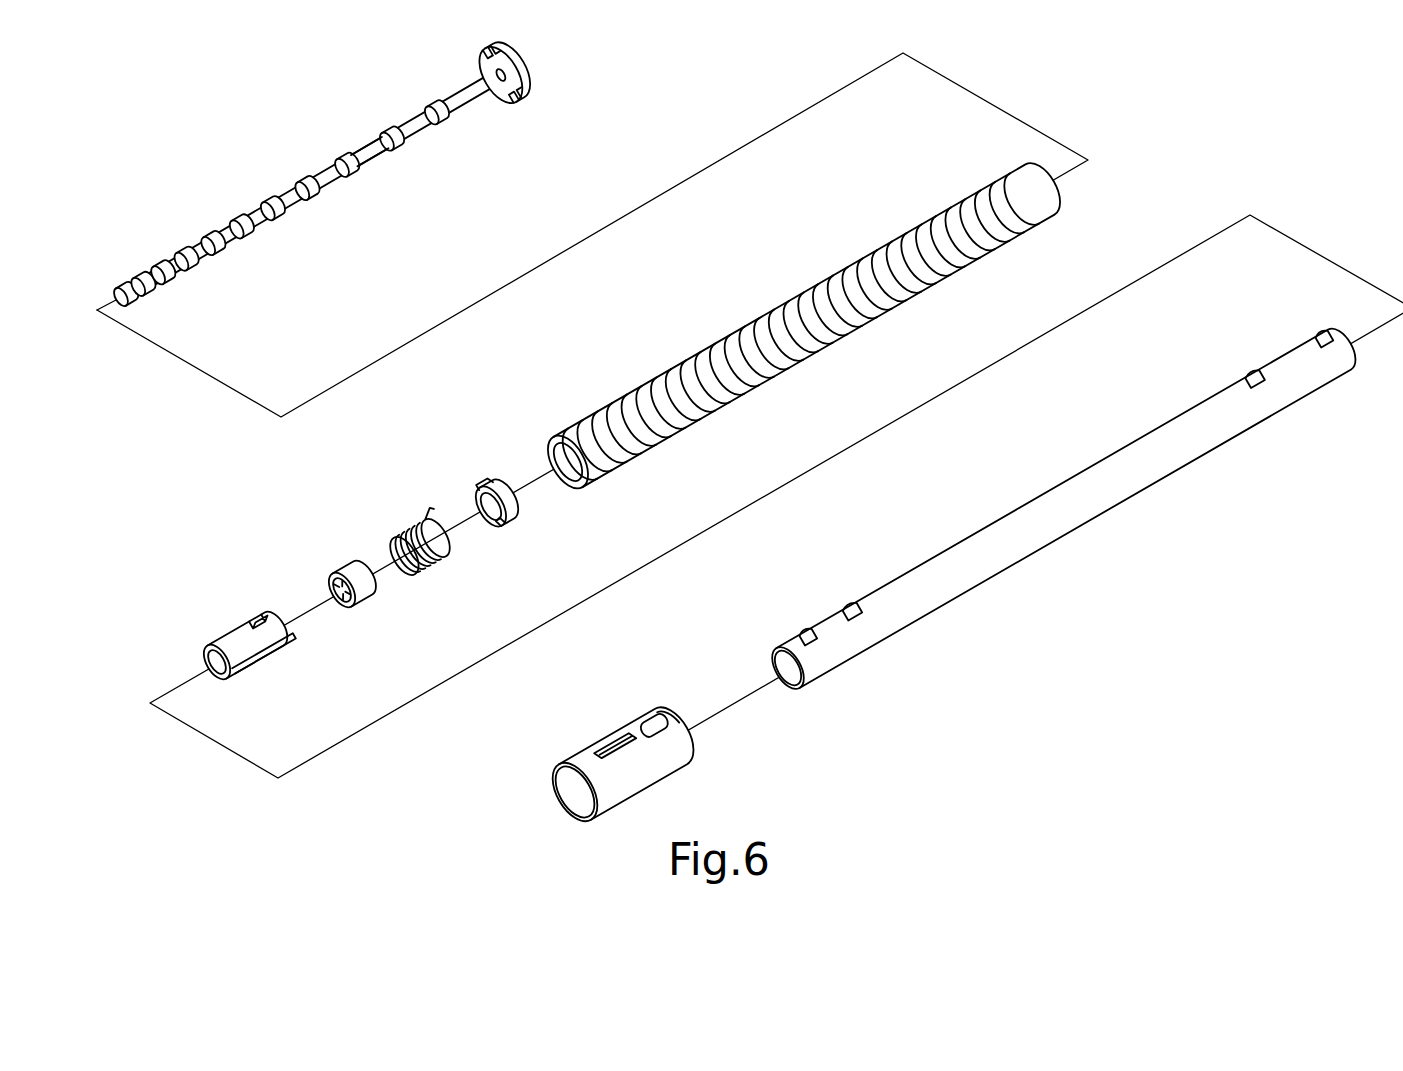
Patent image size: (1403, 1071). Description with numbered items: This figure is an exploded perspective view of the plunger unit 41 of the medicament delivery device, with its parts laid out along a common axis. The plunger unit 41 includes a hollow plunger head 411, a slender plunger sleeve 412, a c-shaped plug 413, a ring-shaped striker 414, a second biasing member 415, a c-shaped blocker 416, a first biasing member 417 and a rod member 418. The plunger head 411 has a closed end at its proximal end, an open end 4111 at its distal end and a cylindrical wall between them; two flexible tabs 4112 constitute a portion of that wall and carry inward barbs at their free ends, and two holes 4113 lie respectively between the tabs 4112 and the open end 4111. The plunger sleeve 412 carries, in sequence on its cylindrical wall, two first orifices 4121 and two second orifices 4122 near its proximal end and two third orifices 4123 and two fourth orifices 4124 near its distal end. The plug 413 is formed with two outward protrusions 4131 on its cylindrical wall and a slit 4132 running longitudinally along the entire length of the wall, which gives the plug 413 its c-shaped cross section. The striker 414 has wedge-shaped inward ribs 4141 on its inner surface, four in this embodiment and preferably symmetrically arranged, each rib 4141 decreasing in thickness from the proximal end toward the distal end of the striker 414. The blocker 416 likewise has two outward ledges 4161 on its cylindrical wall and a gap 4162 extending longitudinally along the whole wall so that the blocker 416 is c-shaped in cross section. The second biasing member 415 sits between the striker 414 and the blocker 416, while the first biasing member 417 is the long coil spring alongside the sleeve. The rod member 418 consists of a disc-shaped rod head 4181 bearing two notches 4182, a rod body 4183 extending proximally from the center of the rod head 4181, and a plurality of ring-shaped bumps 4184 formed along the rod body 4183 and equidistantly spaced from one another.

The plunger unit 41 is at (747, 432).
The hollow plunger head 411 is at (665, 710).
The open end 4111 is at (686, 711).
The flexible tabs 4112 is at (606, 737).
The holes 4113 is at (652, 710).
The slender plunger sleeve 412 is at (1040, 472).
The first orifices 4121 is at (813, 632).
The second orifices 4122 is at (853, 617).
The third orifices 4123 is at (1243, 378).
The fourth orifices 4124 is at (1327, 333).
The c-shaped plug 413 is at (201, 653).
The outward protrusions 4131 is at (253, 620).
The slit 4132 is at (252, 668).
The ring-shaped striker 414 is at (318, 572).
The wedge-shaped inward rib 4141 is at (329, 592).
The second biasing member 415 is at (412, 533).
The c-shaped blocker 416 is at (491, 468).
The outward ledges 4161 is at (492, 481).
The gap 4162 is at (507, 520).
The first biasing member 417 is at (857, 256).
The rod member 418 is at (377, 171).
The disc-shaped rod head 4181 is at (510, 104).
The notches 4182 is at (555, 90).
The rod body 4183 is at (366, 160).
The ring-shaped bumps 4184 is at (436, 123).